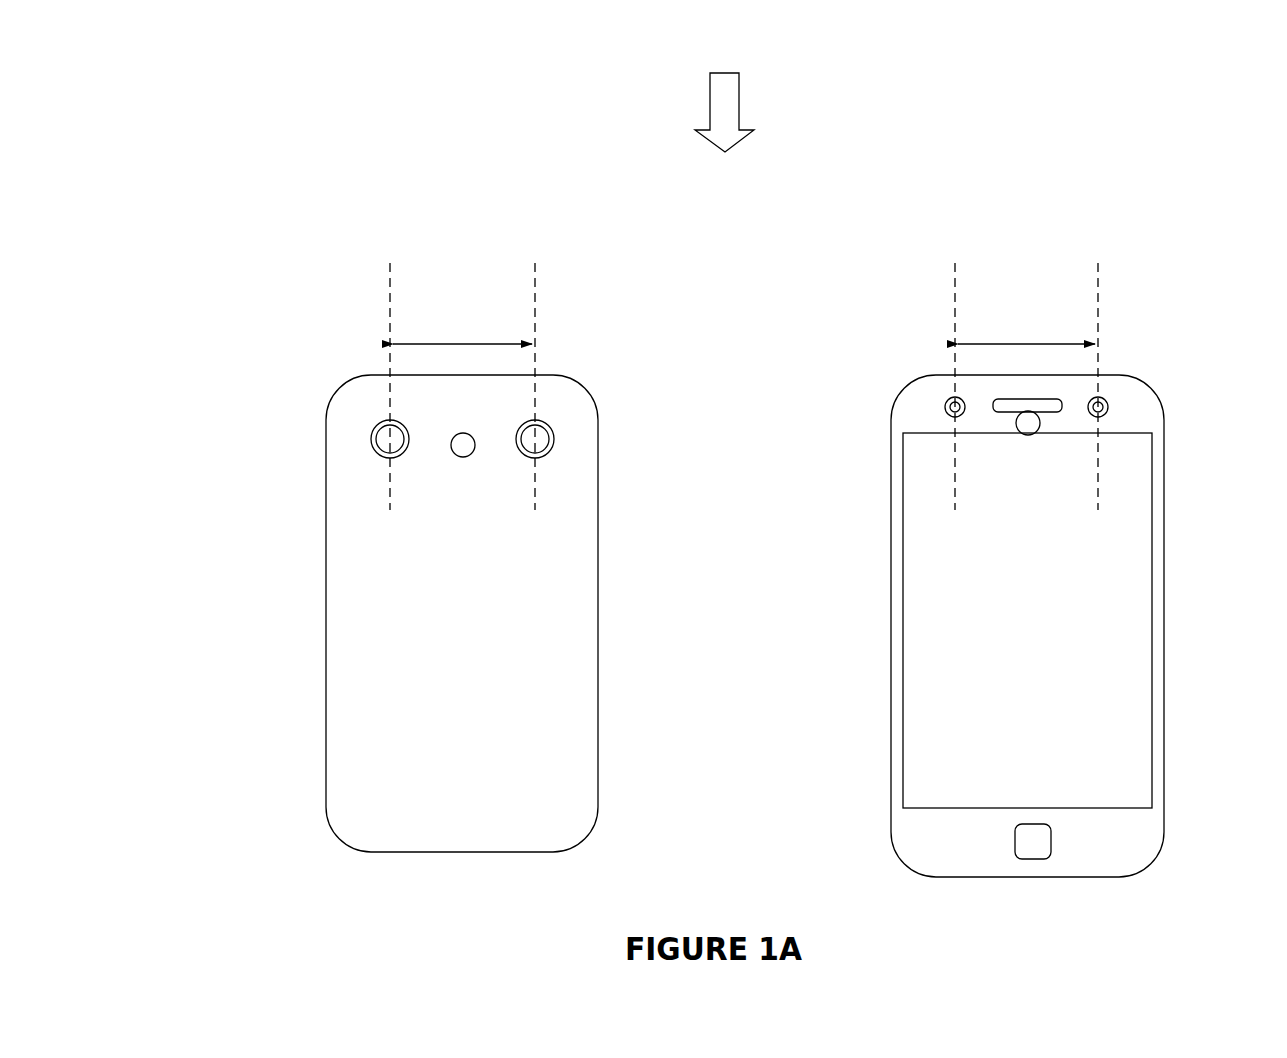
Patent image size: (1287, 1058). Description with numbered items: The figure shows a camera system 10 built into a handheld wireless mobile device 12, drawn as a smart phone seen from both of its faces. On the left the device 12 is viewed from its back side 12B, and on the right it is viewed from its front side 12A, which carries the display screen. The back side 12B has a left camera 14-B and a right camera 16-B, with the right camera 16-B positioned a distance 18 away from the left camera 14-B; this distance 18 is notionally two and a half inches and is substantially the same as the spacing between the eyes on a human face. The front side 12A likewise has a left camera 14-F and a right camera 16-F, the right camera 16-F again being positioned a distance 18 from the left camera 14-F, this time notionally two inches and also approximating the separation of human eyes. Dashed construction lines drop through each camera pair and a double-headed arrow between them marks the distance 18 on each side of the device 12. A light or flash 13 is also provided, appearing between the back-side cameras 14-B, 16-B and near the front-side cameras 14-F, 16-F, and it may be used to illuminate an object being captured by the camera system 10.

The camera system 10 is at (739, 97).
The handheld wireless mobile device 12 is at (891, 580).
The front side 12A is at (957, 683).
The back side 12B is at (393, 637).
The light or flash 13 is at (462, 458).
The left camera 14-B is at (372, 420).
The left camera 14-F is at (935, 388).
The right camera 16-B is at (553, 408).
The right camera 16-F is at (1108, 385).
The distance 18 is at (484, 340).